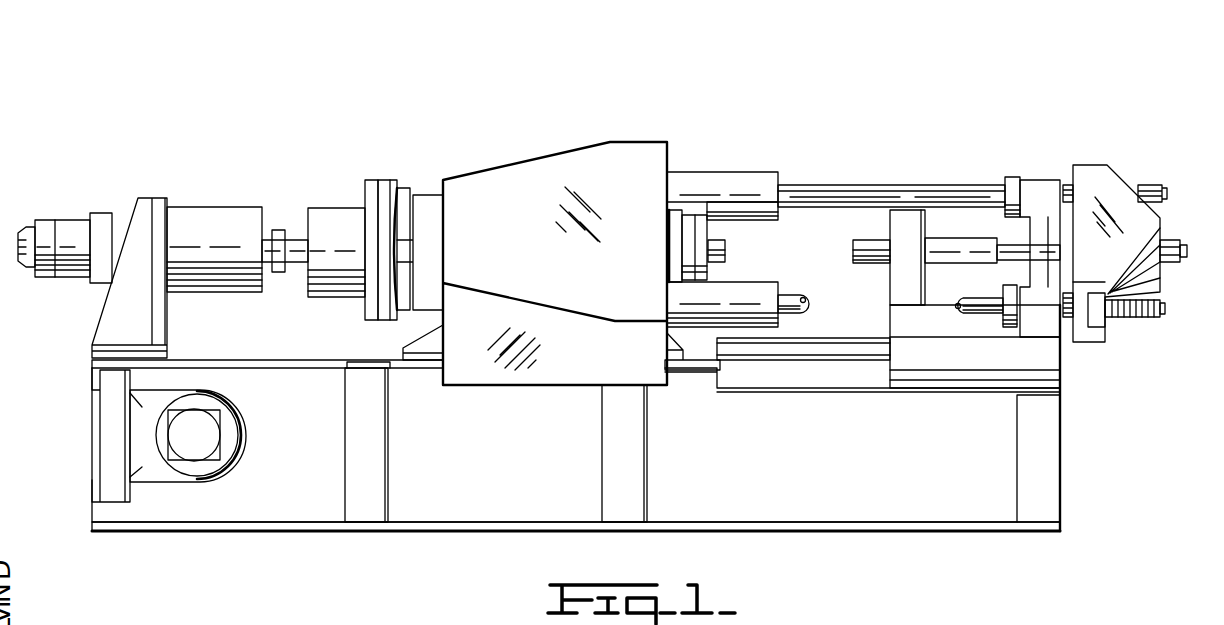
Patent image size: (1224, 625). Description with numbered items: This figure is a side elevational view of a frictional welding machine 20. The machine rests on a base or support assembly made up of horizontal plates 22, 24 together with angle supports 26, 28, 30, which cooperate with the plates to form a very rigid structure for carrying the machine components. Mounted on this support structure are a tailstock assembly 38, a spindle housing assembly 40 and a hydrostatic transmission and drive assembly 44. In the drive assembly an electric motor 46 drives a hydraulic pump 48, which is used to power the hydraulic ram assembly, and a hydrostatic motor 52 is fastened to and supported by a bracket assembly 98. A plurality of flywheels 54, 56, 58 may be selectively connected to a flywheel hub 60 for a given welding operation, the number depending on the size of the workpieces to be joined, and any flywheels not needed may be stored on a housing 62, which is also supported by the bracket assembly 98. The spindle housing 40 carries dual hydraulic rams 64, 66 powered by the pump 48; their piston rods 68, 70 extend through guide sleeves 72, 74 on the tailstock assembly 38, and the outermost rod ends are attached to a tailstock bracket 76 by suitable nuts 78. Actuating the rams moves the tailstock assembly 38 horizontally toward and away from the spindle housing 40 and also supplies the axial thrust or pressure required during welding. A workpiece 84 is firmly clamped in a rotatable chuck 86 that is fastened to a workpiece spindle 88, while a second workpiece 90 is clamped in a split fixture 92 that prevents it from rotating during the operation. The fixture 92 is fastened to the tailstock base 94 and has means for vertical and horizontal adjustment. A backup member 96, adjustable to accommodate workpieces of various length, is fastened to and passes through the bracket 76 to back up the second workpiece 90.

The frictional welding machine 20 is at (744, 72).
The horizontal plate 22 is at (262, 368).
The horizontal plate 24 is at (242, 533).
The angle support 26 is at (380, 470).
The angle support 28 is at (633, 470).
The angle support 30 is at (1022, 452).
The tailstock assembly 38 is at (930, 166).
The spindle housing assembly 40 is at (500, 222).
The hydrostatic transmission and drive assembly 44 is at (203, 184).
The electric motor 46 is at (220, 404).
The hydraulic pump 48 is at (205, 452).
The hydrostatic motor 52 is at (66, 228).
The flywheel 54 is at (385, 184).
The flywheel 56 is at (370, 185).
The flywheel 58 is at (362, 198).
The flywheel hub 60 is at (405, 193).
The housing 62 is at (190, 240).
The hydraulic ram 64 is at (736, 153).
The hydraulic ram 66 is at (673, 296).
The piston rod 68 is at (848, 168).
The piston rod 70 is at (788, 297).
The guide sleeve 72 is at (1030, 185).
The guide sleeve 74 is at (1035, 330).
The tailstock bracket 76 is at (1080, 271).
The nut 78 is at (1094, 318).
The workpiece 84 is at (716, 240).
The rotatable chuck 86 is at (690, 242).
The workpiece spindle 88 is at (673, 222).
The second workpiece 90 is at (862, 244).
The split fixture 92 is at (912, 233).
The tailstock base 94 is at (898, 325).
The backup member 96 is at (1160, 243).
The bracket assembly 98 is at (113, 312).